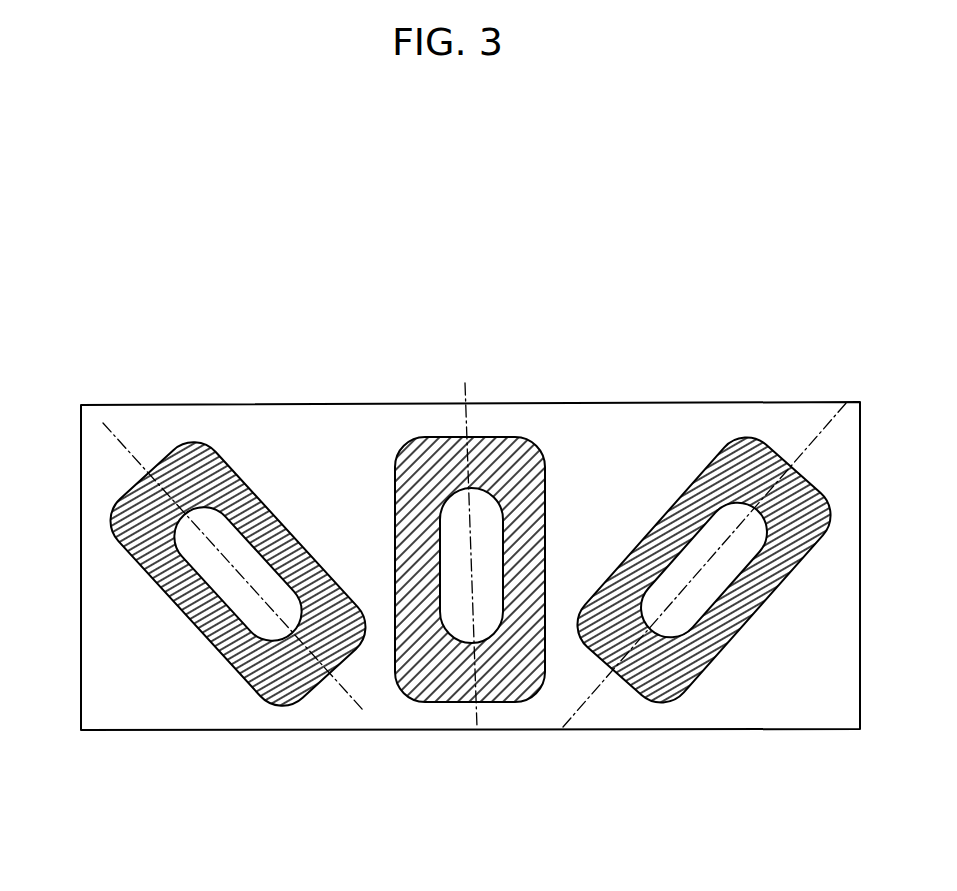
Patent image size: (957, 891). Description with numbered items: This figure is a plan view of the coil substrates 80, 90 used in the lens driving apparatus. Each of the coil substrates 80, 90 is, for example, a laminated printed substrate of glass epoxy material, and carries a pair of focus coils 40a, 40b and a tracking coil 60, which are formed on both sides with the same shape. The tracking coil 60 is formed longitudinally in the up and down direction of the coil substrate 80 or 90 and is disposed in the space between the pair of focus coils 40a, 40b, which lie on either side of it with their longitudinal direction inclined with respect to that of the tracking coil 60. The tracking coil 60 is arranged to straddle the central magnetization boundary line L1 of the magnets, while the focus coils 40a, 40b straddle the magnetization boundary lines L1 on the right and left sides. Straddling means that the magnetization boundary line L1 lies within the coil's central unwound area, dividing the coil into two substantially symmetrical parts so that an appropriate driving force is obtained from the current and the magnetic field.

The coil substrate 80 is at (422, 290).
The coil substrate 90 is at (470, 452).
The magnetization boundary line L1 is at (131, 442).
The focus coil 40a is at (279, 706).
The tracking coil 60 is at (473, 703).
The focus coil 40b is at (652, 706).